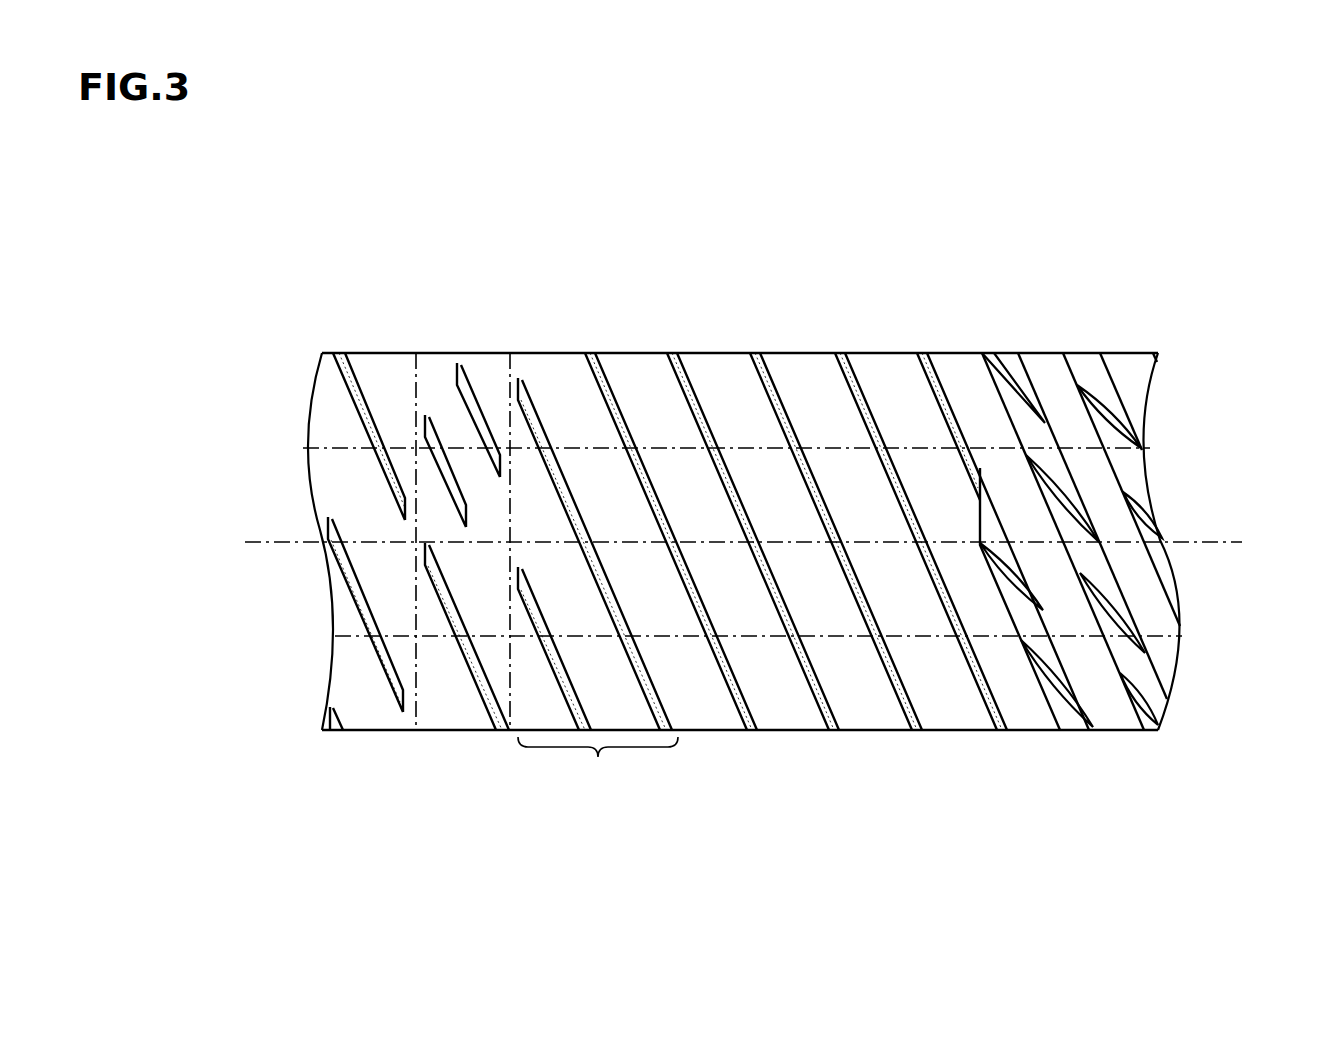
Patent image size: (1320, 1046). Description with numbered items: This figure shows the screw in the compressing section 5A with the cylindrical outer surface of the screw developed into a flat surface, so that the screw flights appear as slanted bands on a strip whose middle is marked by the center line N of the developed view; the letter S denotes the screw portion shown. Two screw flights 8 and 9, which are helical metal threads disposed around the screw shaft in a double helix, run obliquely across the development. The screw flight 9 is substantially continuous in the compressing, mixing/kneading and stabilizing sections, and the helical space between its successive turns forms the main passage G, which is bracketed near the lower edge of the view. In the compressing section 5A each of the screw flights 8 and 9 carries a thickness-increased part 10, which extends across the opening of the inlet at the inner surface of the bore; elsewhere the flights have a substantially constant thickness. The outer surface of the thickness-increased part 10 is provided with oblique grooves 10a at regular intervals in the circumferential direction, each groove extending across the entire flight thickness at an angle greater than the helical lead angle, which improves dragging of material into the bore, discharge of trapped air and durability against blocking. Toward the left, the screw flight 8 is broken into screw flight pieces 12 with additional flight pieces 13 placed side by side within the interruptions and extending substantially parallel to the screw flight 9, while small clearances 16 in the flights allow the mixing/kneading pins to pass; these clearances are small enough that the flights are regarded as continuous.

The pneumatic tire / tread portion S is at (1193, 338).
The center line N is at (761, 545).
The compressing section 5A is at (1158, 328).
The main passage G is at (598, 769).
The screw flight 8 is at (735, 692).
The screw flight 9 is at (655, 698).
The thickness-increased part 10 is at (1118, 400).
The oblique grooves 10a is at (1097, 592).
The screw flight pieces 12 is at (362, 598).
The additional flight pieces 13 is at (433, 460).
The clearances 16 is at (408, 527).